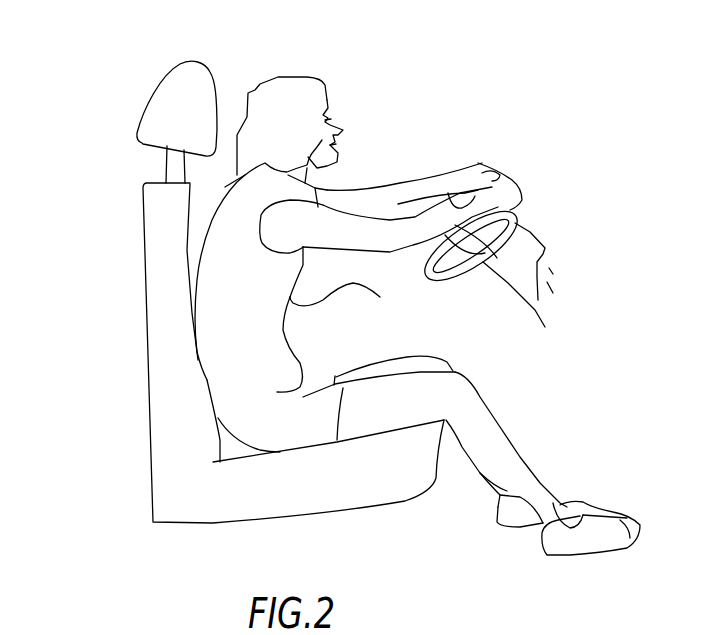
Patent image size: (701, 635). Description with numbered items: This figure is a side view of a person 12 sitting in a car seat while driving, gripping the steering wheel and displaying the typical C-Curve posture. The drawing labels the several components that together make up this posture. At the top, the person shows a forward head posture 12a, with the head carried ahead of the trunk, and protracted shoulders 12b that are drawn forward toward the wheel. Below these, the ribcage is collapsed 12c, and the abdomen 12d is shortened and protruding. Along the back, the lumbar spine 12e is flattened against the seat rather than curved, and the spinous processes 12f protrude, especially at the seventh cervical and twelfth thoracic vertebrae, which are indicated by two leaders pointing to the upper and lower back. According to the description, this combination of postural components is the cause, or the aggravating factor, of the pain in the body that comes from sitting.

The person sitting in C-Curve posture 12 is at (317, 67).
The forward head posture 12a is at (337, 173).
The protracted shoulders 12b is at (327, 205).
The collapsed ribcage 12c is at (349, 283).
The shortened and protruding abdomen 12d is at (288, 366).
The flattened lumbar spine 12e is at (213, 400).
The protruding spinous processes 12f is at (237, 182).